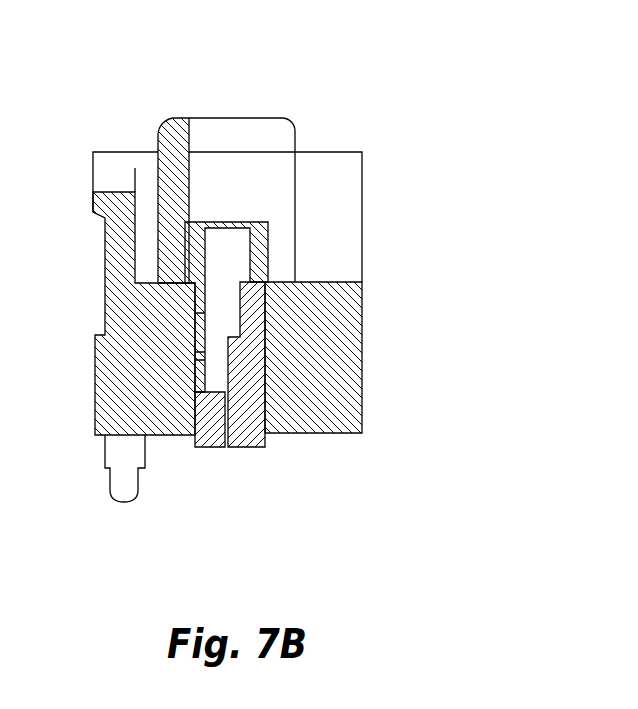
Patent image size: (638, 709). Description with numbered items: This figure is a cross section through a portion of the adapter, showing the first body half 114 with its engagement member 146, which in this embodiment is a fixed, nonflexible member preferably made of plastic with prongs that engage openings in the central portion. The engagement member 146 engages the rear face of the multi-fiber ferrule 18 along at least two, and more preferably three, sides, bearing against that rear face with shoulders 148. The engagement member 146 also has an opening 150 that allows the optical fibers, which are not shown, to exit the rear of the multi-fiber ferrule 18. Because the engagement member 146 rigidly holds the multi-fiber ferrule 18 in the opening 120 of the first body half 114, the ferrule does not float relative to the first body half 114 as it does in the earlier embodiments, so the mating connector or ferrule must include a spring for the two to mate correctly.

The first body half 114 is at (326, 265).
The engagement member 146 is at (293, 120).
The opening 150 is at (218, 113).
The opening 120 is at (265, 297).
The shoulders 148 is at (283, 222).
The multi-fiber ferrule 18 is at (265, 438).